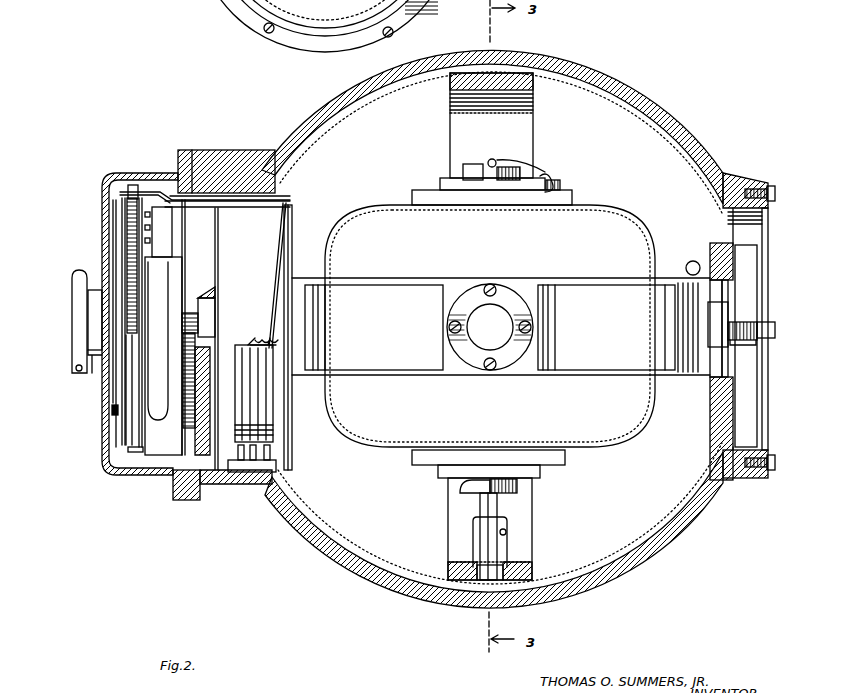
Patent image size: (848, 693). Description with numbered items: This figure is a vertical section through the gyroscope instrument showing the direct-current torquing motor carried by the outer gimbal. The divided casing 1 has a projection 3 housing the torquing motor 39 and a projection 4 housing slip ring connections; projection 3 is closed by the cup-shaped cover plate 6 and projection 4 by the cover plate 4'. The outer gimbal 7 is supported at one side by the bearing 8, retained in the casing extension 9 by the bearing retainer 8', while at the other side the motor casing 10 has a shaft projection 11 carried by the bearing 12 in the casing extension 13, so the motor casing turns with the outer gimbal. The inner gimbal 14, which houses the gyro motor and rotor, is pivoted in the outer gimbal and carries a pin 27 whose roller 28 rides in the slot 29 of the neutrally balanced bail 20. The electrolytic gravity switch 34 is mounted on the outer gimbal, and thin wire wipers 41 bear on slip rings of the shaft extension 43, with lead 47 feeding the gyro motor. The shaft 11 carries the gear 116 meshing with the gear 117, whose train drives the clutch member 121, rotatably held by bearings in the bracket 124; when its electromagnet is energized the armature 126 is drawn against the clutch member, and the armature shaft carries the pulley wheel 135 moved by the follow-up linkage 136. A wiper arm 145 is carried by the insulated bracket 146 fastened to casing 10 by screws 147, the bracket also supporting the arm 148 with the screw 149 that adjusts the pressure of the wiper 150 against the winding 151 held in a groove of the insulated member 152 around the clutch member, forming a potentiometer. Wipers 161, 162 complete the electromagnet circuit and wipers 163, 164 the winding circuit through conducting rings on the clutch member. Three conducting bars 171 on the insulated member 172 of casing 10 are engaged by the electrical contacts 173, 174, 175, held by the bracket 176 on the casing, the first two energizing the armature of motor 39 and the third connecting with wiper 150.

The divided casing 1 is at (303, 533).
The projection 3 is at (238, 165).
The projection 4 is at (749, 314).
The cover plate 4' is at (779, 329).
The cup-shaped cover plate 6 is at (138, 178).
The outer gimbal 7 is at (672, 377).
The bearing 8 is at (749, 321).
The bearing retainer 8' is at (757, 326).
The casing extension 9 is at (722, 415).
The motor casing 10 is at (292, 232).
The shaft projection 11 is at (216, 317).
The bearing 12 is at (216, 301).
The casing extension 13 is at (210, 487).
The inner gimbal 14 is at (600, 215).
The neutrally balanced bail 20 is at (512, 80).
The pin 27 is at (490, 503).
The roller 28 is at (478, 568).
The slot 29 is at (505, 533).
The electrolytic gravity switch 34 is at (692, 261).
The torquing motor 39 is at (298, 220).
The thin wire wipers 41 is at (736, 341).
The shaft extension 43 is at (760, 323).
The lead 47 is at (565, 193).
The gear 116 is at (190, 305).
The gear 117 is at (188, 433).
The clutch member 121 is at (122, 389).
The bracket 124 is at (155, 418).
The armature 126 is at (113, 410).
The pulley wheel 135 is at (72, 340).
The follow-up linkage 136 is at (95, 358).
The wiper arm 145 is at (155, 190).
The insulated bracket 146 is at (257, 209).
The screws 147 is at (220, 195).
The arm 148 is at (200, 198).
The screw 149 is at (203, 165).
The wiper 150 is at (132, 188).
The winding 151 is at (133, 457).
The insulated member 152 is at (126, 428).
The wiper 161 is at (130, 203).
The wiper 162 is at (145, 215).
The wiper 163 is at (145, 228).
The wiper 164 is at (145, 242).
The conducting bars 171 is at (265, 344).
The insulated member 172 is at (262, 410).
The electrical contact 173 is at (240, 472).
The electrical contact 174 is at (252, 472).
The electrical contact 175 is at (266, 472).
The bracket 176 is at (278, 466).